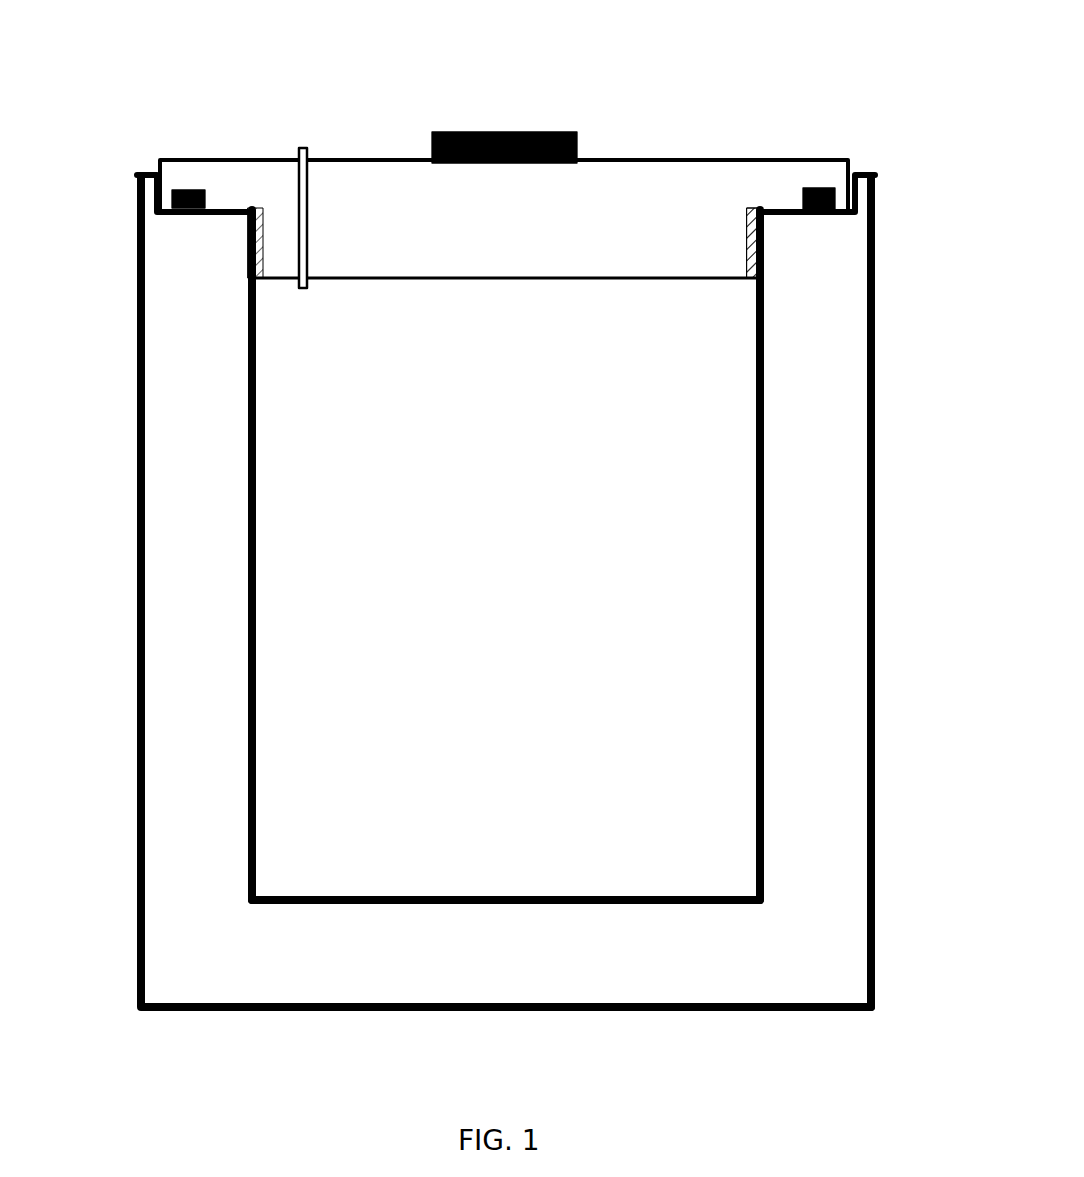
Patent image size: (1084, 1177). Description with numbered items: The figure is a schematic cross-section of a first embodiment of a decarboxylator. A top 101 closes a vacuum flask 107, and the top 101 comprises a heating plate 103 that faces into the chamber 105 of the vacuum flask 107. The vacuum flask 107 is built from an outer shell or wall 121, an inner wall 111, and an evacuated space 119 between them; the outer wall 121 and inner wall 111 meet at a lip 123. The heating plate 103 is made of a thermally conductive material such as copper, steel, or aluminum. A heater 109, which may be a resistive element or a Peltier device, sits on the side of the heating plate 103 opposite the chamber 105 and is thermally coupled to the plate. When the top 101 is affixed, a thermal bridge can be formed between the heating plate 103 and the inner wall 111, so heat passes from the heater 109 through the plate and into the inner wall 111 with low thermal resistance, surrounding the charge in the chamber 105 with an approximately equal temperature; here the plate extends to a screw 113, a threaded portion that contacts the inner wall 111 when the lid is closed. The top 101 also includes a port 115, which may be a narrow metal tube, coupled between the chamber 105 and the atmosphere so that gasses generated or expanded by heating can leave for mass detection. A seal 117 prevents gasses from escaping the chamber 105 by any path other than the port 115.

The top 101 is at (398, 237).
The heating plate 103 is at (605, 279).
The chamber 105 is at (535, 613).
The vacuum flask 107 is at (132, 345).
The heater 109 is at (552, 132).
The inner wall 111 is at (755, 500).
The screw 113 is at (762, 210).
The port 115 is at (302, 290).
The seal 117 is at (199, 190).
The evacuated space 119 is at (815, 708).
The outer wall 121 is at (873, 568).
The lip 123 is at (870, 170).